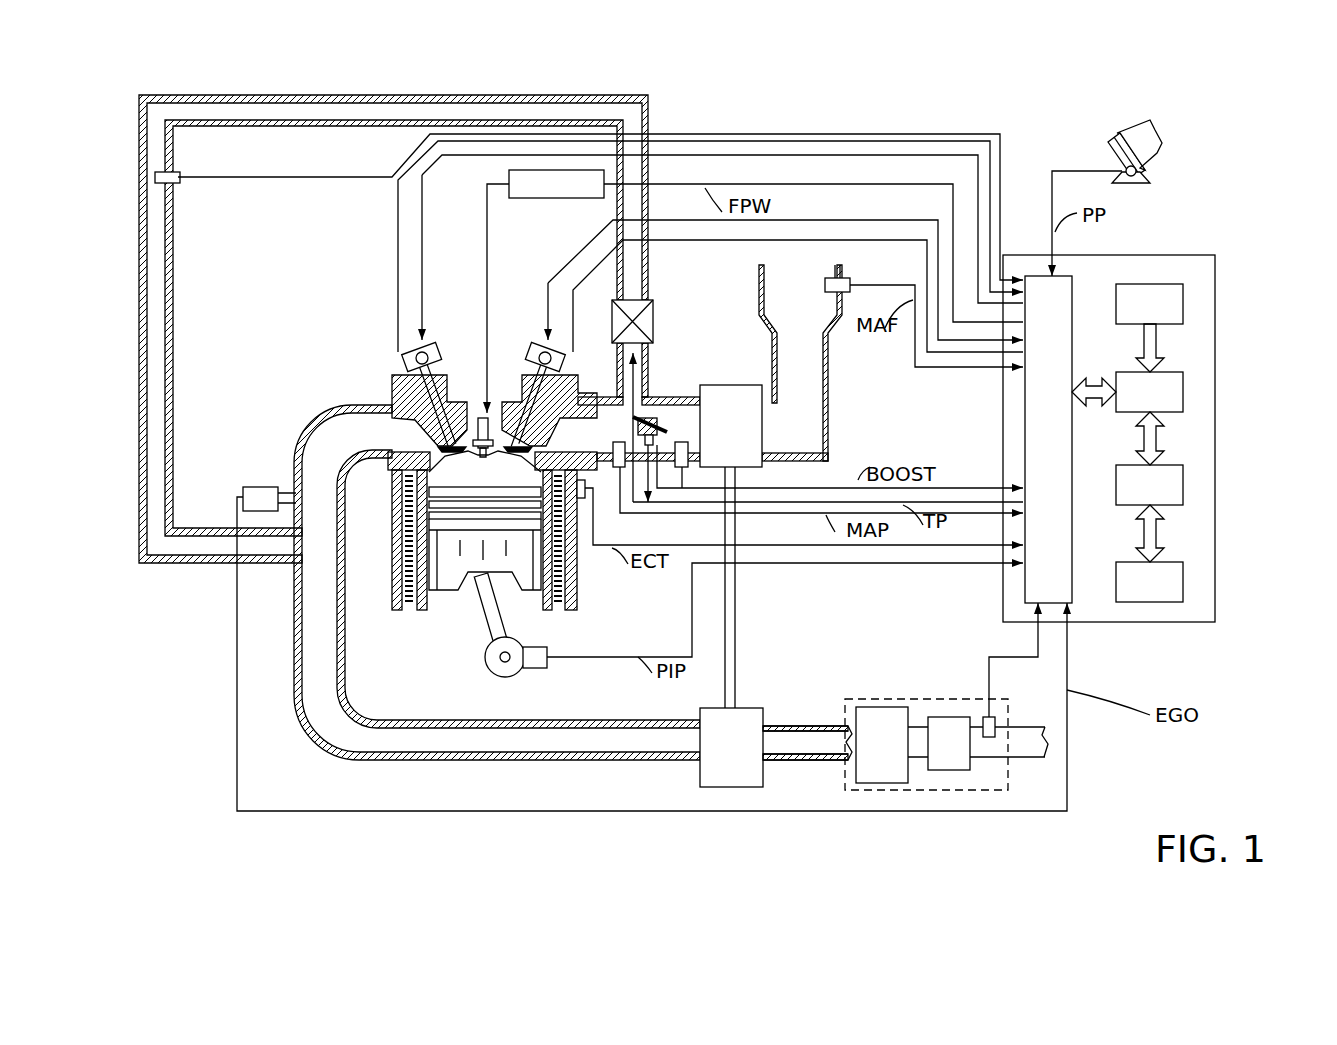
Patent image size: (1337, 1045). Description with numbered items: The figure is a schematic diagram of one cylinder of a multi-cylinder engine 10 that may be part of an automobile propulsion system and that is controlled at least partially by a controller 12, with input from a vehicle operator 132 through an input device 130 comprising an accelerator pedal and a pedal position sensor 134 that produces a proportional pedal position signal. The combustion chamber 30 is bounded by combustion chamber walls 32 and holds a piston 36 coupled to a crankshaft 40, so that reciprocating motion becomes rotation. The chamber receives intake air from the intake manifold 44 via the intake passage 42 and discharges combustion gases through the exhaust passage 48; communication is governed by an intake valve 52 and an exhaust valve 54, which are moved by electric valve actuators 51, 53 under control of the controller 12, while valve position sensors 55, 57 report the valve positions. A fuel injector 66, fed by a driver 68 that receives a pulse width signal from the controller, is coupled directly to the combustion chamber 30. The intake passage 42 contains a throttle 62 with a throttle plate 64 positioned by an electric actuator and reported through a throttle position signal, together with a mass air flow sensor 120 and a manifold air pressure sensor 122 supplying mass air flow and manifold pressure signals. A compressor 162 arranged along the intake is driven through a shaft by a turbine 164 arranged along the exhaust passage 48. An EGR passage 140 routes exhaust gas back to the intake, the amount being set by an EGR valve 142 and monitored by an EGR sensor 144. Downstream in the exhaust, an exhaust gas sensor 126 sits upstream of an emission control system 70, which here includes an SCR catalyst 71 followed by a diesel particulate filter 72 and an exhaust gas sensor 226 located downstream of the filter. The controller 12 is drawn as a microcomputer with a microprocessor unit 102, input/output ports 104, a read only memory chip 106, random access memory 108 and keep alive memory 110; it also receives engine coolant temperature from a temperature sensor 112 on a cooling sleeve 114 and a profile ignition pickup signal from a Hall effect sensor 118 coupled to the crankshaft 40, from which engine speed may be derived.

The engine 10 is at (642, 426).
The controller 12 is at (1150, 425).
The combustion chamber 30 is at (392, 572).
The combustion chamber walls 32 is at (432, 600).
The piston 36 is at (472, 568).
The crankshaft 40 is at (492, 674).
The intake passage 42 is at (800, 363).
The intake manifold 44 is at (703, 429).
The exhaust passage 48 is at (497, 582).
The electric valve actuator 51 is at (532, 348).
The intake valve 52 is at (522, 432).
The electric valve actuator 53 is at (438, 345).
The exhaust valve 54 is at (435, 430).
The valve position sensor 55 is at (560, 362).
The valve position sensor 57 is at (405, 368).
The throttle 62 is at (652, 412).
The throttle plate 64 is at (665, 430).
The fuel injector 66 is at (486, 422).
The driver 68 is at (585, 200).
The emission control system 70 is at (946, 725).
The SCR catalyst 71 is at (882, 745).
The diesel particulate filter 72 is at (949, 743).
The microprocessor unit 102 is at (1183, 395).
The input/output ports 104 is at (1075, 285).
The read only memory chip 106 is at (1183, 300).
The random access memory 108 is at (1183, 480).
The keep alive memory 110 is at (1183, 578).
The temperature sensor 112 is at (584, 498).
The cooling sleeve 114 is at (575, 562).
The Hall effect sensor 118 is at (540, 673).
The mass air flow sensor 120 is at (845, 276).
The manifold air pressure sensor 122 is at (613, 444).
The exhaust gas sensor 126 is at (243, 497).
The input device 130 is at (1110, 147).
The vehicle operator 132 is at (1160, 133).
The pedal position sensor 134 is at (1140, 172).
The EGR passage 140 is at (432, 72).
The EGR valve 142 is at (655, 330).
The EGR sensor 144 is at (178, 183).
The compressor 162 is at (731, 546).
The turbine 164 is at (776, 747).
The exhaust gas sensor 226 is at (995, 722).